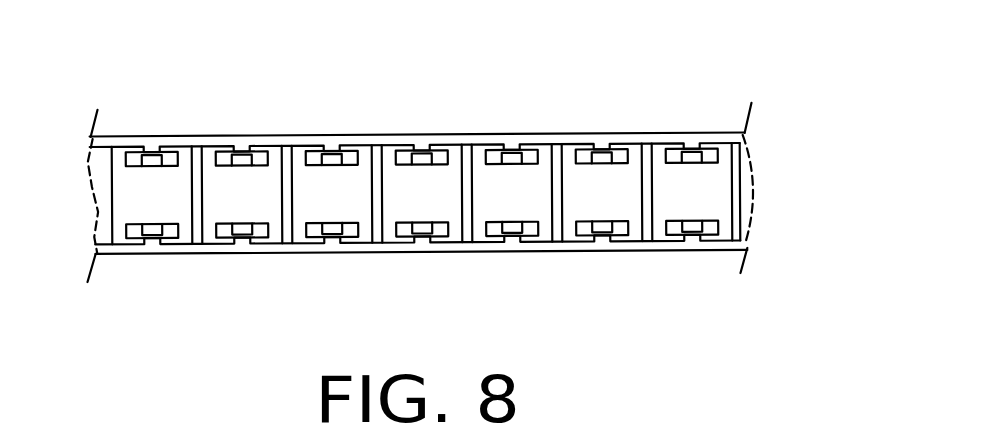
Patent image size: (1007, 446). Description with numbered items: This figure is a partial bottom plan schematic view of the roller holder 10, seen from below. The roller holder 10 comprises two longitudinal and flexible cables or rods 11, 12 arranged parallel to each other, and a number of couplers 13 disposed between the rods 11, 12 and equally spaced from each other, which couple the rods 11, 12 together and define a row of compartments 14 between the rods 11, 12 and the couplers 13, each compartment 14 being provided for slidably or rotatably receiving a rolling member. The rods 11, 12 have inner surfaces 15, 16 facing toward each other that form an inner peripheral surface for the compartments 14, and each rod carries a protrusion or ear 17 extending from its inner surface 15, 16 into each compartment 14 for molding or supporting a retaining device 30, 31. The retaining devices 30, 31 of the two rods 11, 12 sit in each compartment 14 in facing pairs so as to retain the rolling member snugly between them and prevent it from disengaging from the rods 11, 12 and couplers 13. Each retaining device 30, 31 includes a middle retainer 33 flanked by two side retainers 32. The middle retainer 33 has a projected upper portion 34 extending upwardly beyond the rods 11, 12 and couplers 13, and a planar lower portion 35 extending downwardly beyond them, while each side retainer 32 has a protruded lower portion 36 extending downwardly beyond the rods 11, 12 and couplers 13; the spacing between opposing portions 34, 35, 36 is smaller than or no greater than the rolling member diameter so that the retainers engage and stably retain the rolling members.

The roller holder 10 is at (713, 79).
The longitudinal flexible rod 11 is at (630, 248).
The longitudinal flexible rod 12 is at (630, 136).
The coupler 13 is at (647, 190).
The compartment 14 is at (125, 200).
The inner surface 15 is at (212, 243).
The inner surface 16 is at (212, 148).
The protrusion or ear 17 is at (513, 153).
The retaining device 30 is at (138, 237).
The retaining device 31 is at (139, 155).
The side retainer 32 is at (443, 155).
The middle retainer 33 is at (513, 162).
The projected upper portion 34 is at (690, 163).
The planar lower portion 35 is at (332, 158).
The protruded lower portion 36 is at (325, 224).